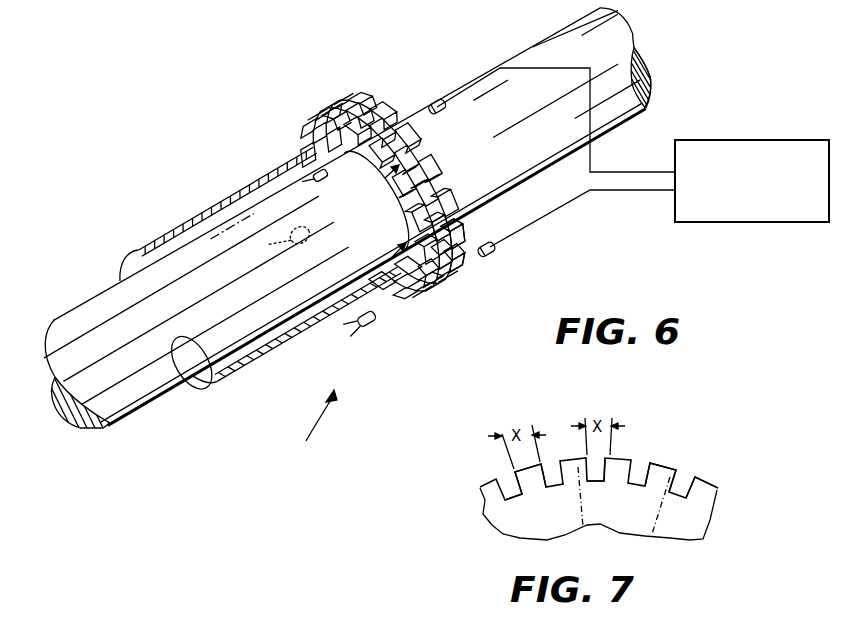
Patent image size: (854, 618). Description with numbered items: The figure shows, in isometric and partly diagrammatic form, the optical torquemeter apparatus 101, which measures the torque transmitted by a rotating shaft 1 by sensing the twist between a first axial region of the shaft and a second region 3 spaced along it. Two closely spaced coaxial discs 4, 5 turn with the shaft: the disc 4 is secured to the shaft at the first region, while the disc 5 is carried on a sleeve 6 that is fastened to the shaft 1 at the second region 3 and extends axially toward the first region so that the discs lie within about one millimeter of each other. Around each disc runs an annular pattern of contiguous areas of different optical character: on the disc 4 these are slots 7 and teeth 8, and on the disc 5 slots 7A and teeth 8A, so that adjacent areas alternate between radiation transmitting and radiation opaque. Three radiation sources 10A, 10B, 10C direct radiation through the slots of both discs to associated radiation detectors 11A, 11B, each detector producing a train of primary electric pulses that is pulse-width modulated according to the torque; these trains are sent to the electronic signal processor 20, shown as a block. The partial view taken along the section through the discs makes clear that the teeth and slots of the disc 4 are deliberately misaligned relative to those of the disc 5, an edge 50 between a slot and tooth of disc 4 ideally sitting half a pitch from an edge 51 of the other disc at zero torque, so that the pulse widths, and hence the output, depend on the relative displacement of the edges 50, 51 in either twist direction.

In FIG. 6, the shaft 1 is at (128, 390).
In FIG. 6, the second region 3 is at (178, 392).
In FIG. 6, the disc 4 is at (356, 210).
In FIG. 7, the disc 4 is at (656, 463).
In FIG. 6, the disc 5 is at (374, 201).
In FIG. 7, the disc 5 is at (680, 530).
In FIG. 6, the sleeve 6 is at (297, 333).
In FIG. 6, the slots 7 is at (399, 186).
In FIG. 7, the slots 7 is at (548, 470).
In FIG. 6, the slots 7A is at (453, 244).
In FIG. 7, the slots 7A is at (606, 478).
In FIG. 6, the teeth 8 is at (388, 192).
In FIG. 7, the teeth 8 is at (694, 478).
In FIG. 6, the teeth 8A is at (442, 242).
In FIG. 7, the teeth 8A is at (716, 490).
In FIG. 6, the radiation source 10A is at (329, 174).
In FIG. 6, the radiation source 10B is at (368, 330).
In FIG. 6, the radiation source 10C is at (290, 248).
In FIG. 6, the radiation detector 11A is at (436, 98).
In FIG. 6, the radiation detector 11B is at (497, 252).
In FIG. 6, the electronic signal processor 20 is at (779, 140).
In FIG. 7, the edge 50 is at (683, 472).
In FIG. 7, the edge 51 is at (566, 478).
In FIG. 6, the optical torquemeter apparatus 101 is at (306, 441).